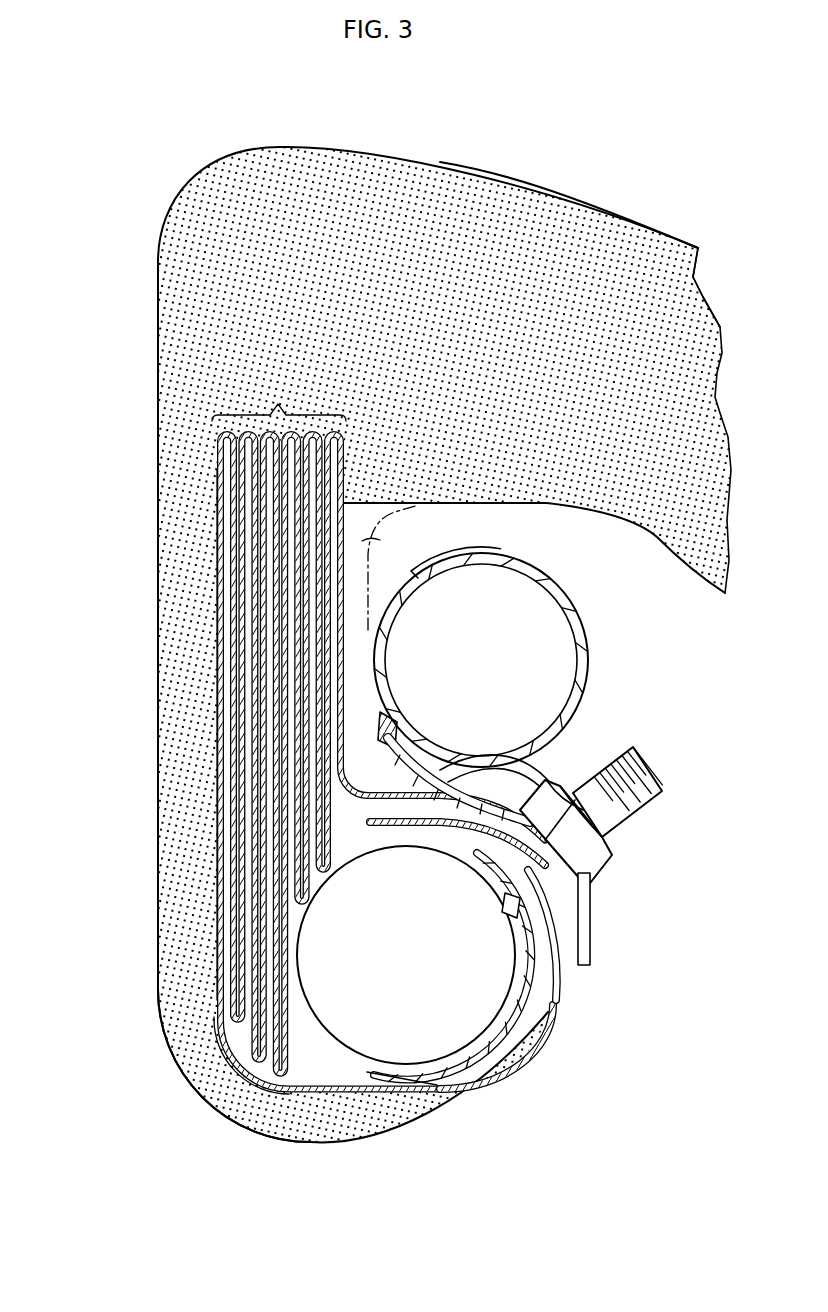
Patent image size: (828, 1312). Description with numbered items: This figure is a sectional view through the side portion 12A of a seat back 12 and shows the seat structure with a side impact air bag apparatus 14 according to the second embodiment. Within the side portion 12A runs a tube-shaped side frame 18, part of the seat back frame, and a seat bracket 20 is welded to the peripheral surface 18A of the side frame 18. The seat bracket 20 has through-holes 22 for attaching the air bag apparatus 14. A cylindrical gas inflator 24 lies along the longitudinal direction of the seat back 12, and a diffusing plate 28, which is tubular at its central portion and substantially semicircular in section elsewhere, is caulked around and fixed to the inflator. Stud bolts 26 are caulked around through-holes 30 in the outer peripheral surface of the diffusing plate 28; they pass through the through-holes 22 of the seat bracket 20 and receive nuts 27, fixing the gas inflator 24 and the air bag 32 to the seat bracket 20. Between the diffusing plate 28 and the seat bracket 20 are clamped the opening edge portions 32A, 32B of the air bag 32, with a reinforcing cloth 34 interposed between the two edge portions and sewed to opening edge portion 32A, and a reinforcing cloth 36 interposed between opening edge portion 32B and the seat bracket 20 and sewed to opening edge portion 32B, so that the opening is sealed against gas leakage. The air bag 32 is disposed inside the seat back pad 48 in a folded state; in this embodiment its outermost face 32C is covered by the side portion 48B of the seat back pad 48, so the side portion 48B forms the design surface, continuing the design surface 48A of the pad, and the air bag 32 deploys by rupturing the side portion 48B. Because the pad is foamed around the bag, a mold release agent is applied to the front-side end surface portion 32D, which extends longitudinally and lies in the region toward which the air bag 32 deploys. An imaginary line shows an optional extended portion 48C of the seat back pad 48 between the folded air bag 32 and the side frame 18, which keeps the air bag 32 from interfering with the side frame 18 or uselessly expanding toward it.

The seat back 12 is at (627, 198).
The side portion 12A is at (538, 173).
The side impact air bag apparatus 14 is at (199, 923).
The side frame 18 is at (599, 636).
The peripheral surface 18A is at (428, 572).
The seat bracket 20 is at (500, 792).
The through-holes 22 is at (614, 858).
The gas inflator 24 is at (490, 1027).
The stud bolts 26 is at (663, 779).
The nuts 27 is at (553, 786).
The diffusing plate 28 is at (490, 1080).
The through-holes 30 is at (505, 908).
The air bag 32 is at (204, 458).
The opening edge portion 32A is at (400, 827).
The opening edge portion 32B is at (560, 990).
The outermost face 32C is at (215, 553).
The front-side end surface portion 32D is at (272, 402).
The reinforcing cloth 34 is at (590, 968).
The reinforcing cloth 36 is at (592, 936).
The seat back pad 48 is at (197, 172).
The design surface 48A is at (155, 318).
The side portion 48B is at (180, 674).
The extended portion 48C is at (395, 530).